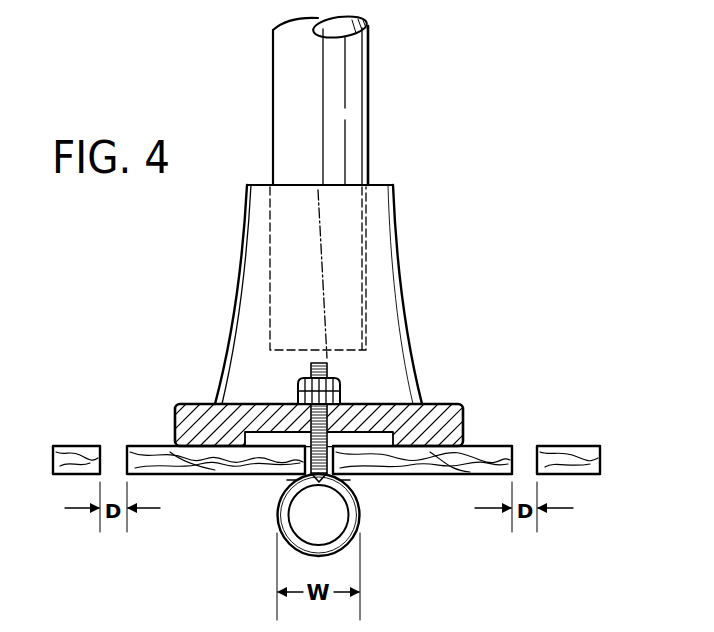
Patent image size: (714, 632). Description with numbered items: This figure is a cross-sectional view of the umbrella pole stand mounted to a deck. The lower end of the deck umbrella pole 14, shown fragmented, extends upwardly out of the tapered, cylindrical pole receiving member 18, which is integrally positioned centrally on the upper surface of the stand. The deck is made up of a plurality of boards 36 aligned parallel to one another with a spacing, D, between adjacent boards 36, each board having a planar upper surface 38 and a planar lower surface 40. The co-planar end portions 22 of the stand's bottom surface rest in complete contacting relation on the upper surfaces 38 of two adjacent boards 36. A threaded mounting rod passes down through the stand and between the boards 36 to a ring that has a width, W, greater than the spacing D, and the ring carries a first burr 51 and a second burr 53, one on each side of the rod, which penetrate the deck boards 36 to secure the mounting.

The deck umbrella pole 14 is at (353, 88).
The pole receiving member 18 is at (383, 328).
The end portions of bottom surface 22 is at (243, 433).
The boards 36 is at (63, 465).
The upper surfaces of boards 38 is at (151, 442).
The lower surfaces of boards 40 is at (181, 479).
The first burr 51 is at (341, 480).
The second burr 53 is at (290, 480).